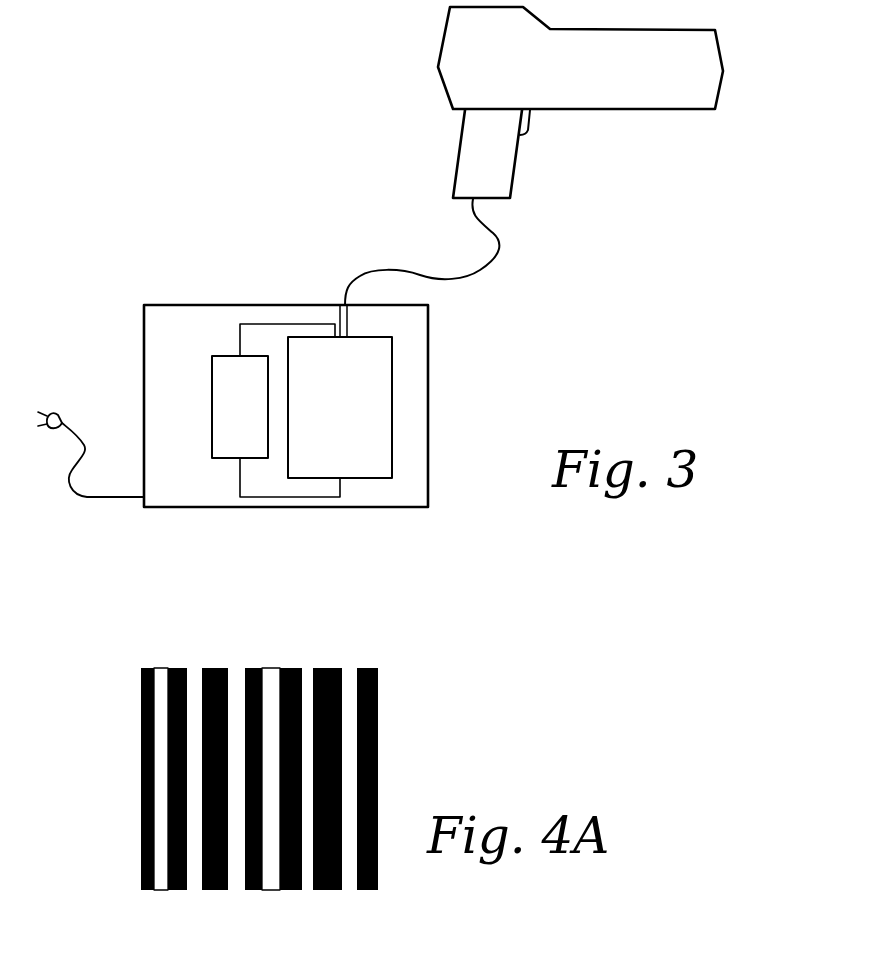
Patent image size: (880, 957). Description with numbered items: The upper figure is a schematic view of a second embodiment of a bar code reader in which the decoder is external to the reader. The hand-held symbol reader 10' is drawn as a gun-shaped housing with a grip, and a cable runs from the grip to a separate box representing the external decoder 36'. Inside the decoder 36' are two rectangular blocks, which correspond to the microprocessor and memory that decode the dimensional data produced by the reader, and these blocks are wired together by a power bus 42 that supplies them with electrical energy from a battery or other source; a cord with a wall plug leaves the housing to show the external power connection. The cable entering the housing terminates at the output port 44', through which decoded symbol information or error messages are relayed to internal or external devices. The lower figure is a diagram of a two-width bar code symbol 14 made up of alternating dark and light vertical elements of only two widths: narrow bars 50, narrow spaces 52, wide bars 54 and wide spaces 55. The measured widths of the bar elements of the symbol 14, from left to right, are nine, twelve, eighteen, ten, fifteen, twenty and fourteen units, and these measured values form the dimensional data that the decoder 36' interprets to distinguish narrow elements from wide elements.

In FIG. 3, the symbol reader 10' is at (580, 102).
In FIG. 3, the output port 44' is at (397, 268).
In FIG. 3, the decoder 36' is at (327, 406).
In FIG. 3, the power bus 42 is at (277, 497).
In FIG. 4A, the two-width bar code symbol 14 is at (105, 845).
In FIG. 4A, the narrow bars 50 is at (145, 892).
In FIG. 4A, the narrow spaces 52 is at (160, 892).
In FIG. 4A, the wide bars 54 is at (208, 892).
In FIG. 4A, the wide spaces 55 is at (270, 892).